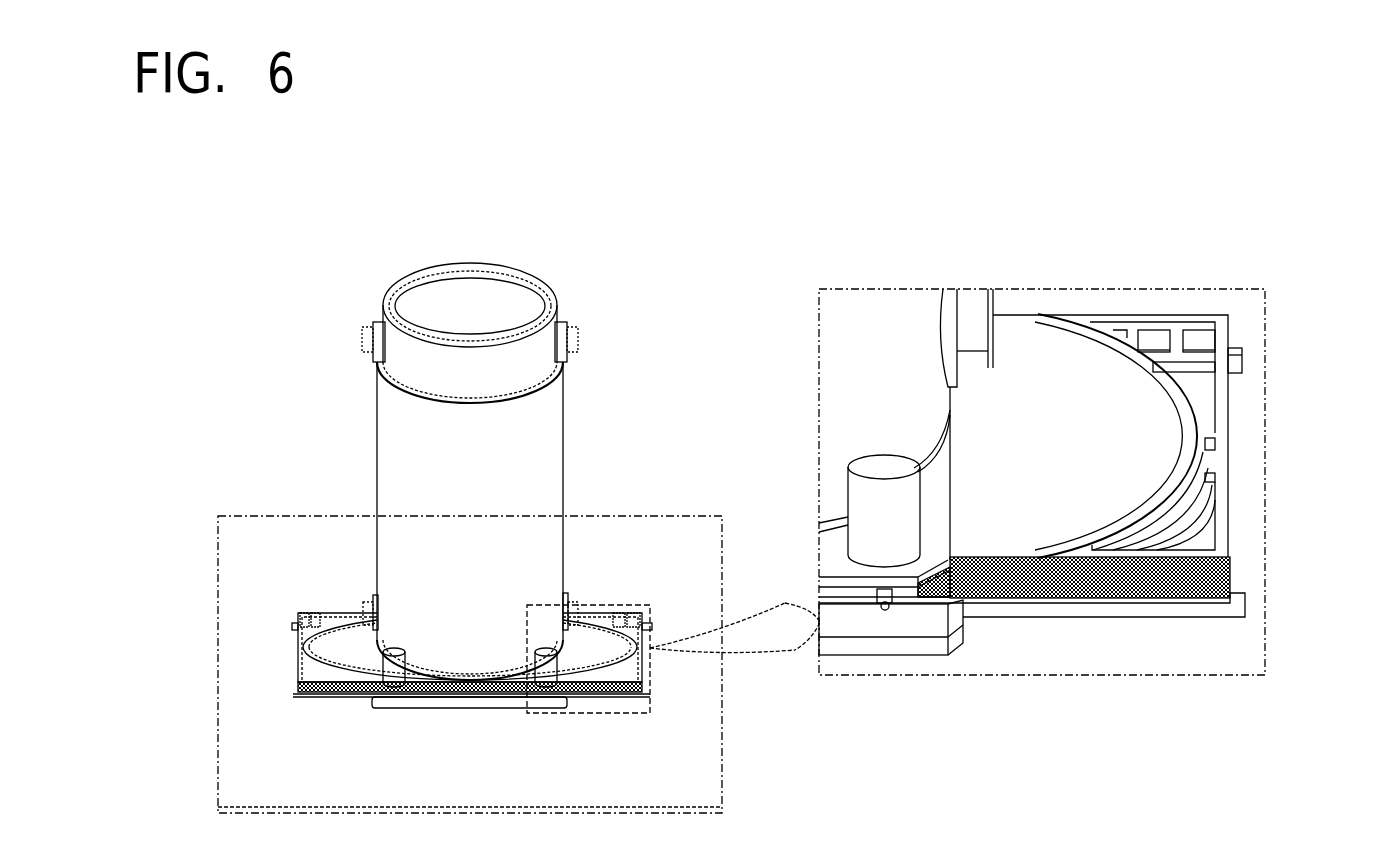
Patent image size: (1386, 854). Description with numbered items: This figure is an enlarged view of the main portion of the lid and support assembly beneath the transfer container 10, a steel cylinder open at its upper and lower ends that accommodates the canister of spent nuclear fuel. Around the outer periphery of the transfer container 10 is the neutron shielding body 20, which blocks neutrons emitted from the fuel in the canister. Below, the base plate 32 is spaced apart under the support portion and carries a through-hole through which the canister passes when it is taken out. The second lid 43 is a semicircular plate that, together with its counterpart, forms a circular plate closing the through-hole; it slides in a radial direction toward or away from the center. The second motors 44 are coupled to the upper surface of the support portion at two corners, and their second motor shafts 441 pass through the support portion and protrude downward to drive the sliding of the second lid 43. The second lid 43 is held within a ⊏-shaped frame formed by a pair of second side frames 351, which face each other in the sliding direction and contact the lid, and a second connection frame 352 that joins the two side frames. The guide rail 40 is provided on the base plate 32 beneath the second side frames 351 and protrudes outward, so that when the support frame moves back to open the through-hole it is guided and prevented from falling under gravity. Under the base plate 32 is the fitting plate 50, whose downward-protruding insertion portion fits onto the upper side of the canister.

The transfer container 10 is at (537, 367).
The neutron shielding body 20 is at (556, 460).
The base plate 32 is at (910, 643).
The guide rail 40 is at (1178, 610).
The second lid 43 is at (1157, 417).
The second motors 44 is at (905, 505).
The second motor shafts 441 is at (882, 610).
The fitting plate 50 is at (845, 652).
The second side frames 351 is at (1171, 313).
The second connection frame 352 is at (1222, 448).